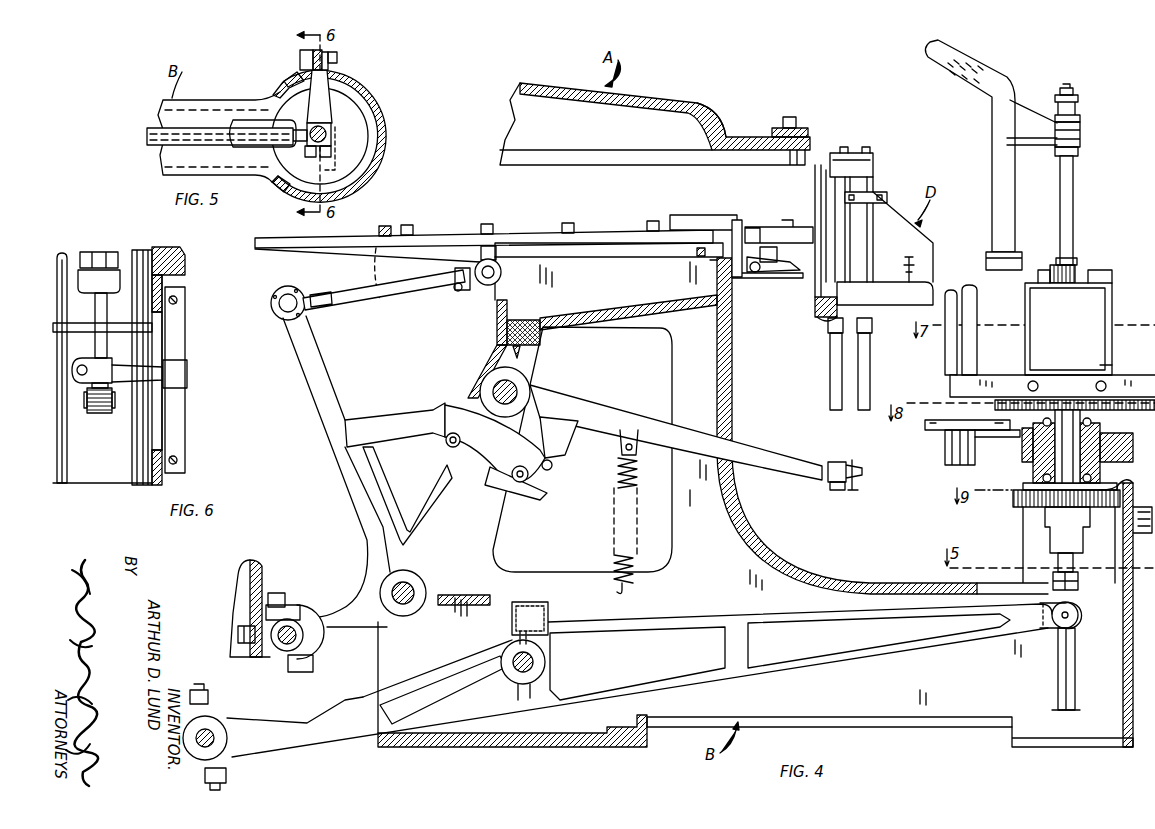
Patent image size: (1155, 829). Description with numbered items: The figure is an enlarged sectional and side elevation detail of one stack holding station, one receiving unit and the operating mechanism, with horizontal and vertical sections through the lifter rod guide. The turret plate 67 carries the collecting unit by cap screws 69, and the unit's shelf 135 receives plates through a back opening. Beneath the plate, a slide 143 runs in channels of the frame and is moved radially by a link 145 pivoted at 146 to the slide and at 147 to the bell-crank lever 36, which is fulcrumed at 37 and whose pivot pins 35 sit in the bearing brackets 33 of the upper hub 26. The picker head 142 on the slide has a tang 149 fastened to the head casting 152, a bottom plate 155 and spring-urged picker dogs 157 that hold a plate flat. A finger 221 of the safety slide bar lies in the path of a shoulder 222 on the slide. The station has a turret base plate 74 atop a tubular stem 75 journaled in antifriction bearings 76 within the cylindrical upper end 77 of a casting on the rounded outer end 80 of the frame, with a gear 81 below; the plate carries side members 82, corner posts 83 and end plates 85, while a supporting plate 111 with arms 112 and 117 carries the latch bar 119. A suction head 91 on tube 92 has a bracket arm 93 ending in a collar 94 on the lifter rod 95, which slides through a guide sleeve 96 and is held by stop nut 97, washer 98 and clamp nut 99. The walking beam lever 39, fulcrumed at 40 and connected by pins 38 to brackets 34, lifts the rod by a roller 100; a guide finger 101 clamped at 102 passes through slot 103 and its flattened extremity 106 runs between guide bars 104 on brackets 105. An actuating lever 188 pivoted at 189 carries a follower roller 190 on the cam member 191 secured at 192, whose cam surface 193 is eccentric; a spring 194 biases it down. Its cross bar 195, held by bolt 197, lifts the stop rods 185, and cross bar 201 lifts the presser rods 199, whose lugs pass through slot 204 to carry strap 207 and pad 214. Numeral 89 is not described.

In FIG. 4, the upper hub 26 is at (250, 560).
In FIG. 4, the bearing bracket 33 is at (267, 653).
In FIG. 4, the bearing bracket 34 is at (190, 775).
In FIG. 4, the pivot pin 35 is at (303, 607).
In FIG. 4, the bell-crank lever 36 is at (345, 497).
In FIG. 4, the fulcrum 37 is at (407, 617).
In FIG. 4, the pin 38 is at (240, 714).
In FIG. 5, the walking beam lever 39 is at (150, 143).
In FIG. 4, the walking beam lever 39 is at (718, 678).
In FIG. 4, the fulcrum 40 is at (537, 668).
In FIG. 4, the turret plate 67 is at (683, 103).
In FIG. 4, the cap screw 69 is at (785, 117).
In FIG. 4, the turret base plate 74 is at (996, 375).
In FIG. 4, the tubular turret stem 75 is at (1038, 462).
In FIG. 4, the antifriction bearing 76 is at (1103, 465).
In FIG. 4, the cylindrical upper end 77 is at (1035, 480).
In FIG. 5, the outer end of frame 80 is at (384, 109).
In FIG. 6, the outer end of frame 80 is at (167, 483).
In FIG. 4, the gear 81 is at (1012, 507).
In FIG. 4, the side member 82 is at (1068, 322).
In FIG. 4, the corner post 83 is at (978, 310).
In FIG. 4, the end plate 85 is at (1070, 258).
In FIG. 4, the post 89 is at (945, 358).
In FIG. 4, the suction head 91 is at (992, 262).
In FIG. 4, the tube 92 is at (994, 170).
In FIG. 4, the bracket arm 93 is at (1032, 122).
In FIG. 4, the collar 94 is at (1082, 134).
In FIG. 5, the lifter rod 95 is at (327, 134).
In FIG. 6, the lifter rod 95 is at (97, 308).
In FIG. 4, the lifter rod 95 is at (1076, 562).
In FIG. 4, the guide sleeve 96 is at (1053, 284).
In FIG. 4, the stop nut 97 is at (1058, 157).
In FIG. 4, the washer 98 is at (1080, 110).
In FIG. 4, the clamp nut 99 is at (1075, 90).
In FIG. 6, the roller 100 is at (100, 413).
In FIG. 4, the roller 100 is at (1078, 622).
In FIG. 6, the guide finger 101 is at (118, 390).
In FIG. 4, the clamp 102 is at (1079, 584).
In FIG. 5, the vertical slot 103 is at (350, 80).
In FIG. 6, the vertical slot 103 is at (160, 432).
In FIG. 4, the vertical slot 103 is at (1067, 677).
In FIG. 5, the guide bar 104 is at (335, 53).
In FIG. 6, the guide bar 104 is at (183, 337).
In FIG. 4, the guide bar 104 is at (1083, 725).
In FIG. 5, the bracket 105 is at (298, 62).
In FIG. 6, the bracket 105 is at (178, 460).
In FIG. 5, the flattened extremity 106 is at (338, 61).
In FIG. 6, the flattened extremity 106 is at (187, 378).
In FIG. 4, the supporting plate 111 is at (1012, 441).
In FIG. 4, the arm 112 is at (1136, 474).
In FIG. 4, the arm 117 is at (963, 435).
In FIG. 4, the latch bar 119 is at (940, 428).
In FIG. 4, the shelf 135 is at (830, 322).
In FIG. 4, the picker head 142 is at (757, 282).
In FIG. 4, the slide 143 is at (450, 245).
In FIG. 4, the link 145 is at (380, 292).
In FIG. 4, the pivot 146 is at (503, 280).
In FIG. 4, the pivot 147 is at (288, 312).
In FIG. 4, the tang portion 149 is at (743, 227).
In FIG. 4, the head casting 152 is at (707, 203).
In FIG. 4, the bottom plate 155 is at (803, 280).
In FIG. 4, the picker dog 157 is at (782, 240).
In FIG. 4, the stop rod 185 is at (830, 392).
In FIG. 4, the actuating lever 188 is at (753, 450).
In FIG. 4, the pivot 189 is at (512, 382).
In FIG. 4, the follower roller 190 is at (530, 474).
In FIG. 4, the cam member 191 is at (460, 400).
In FIG. 4, the attachment point 192 is at (505, 476).
In FIG. 4, the cam surface 193 is at (530, 437).
In FIG. 4, the spring 194 is at (637, 472).
In FIG. 4, the cross bar 195 is at (840, 450).
In FIG. 4, the bolt 197 is at (826, 494).
In FIG. 4, the presser rod 199 is at (867, 150).
In FIG. 4, the cross bar 201 is at (857, 470).
In FIG. 4, the slot 204 is at (885, 207).
In FIG. 4, the strap 207 is at (904, 272).
In FIG. 4, the resilient pad 214 is at (940, 290).
In FIG. 4, the finger 221 is at (696, 252).
In FIG. 4, the shoulder 222 is at (710, 262).